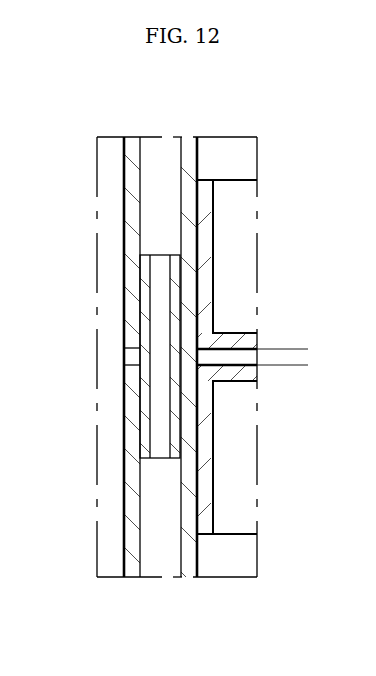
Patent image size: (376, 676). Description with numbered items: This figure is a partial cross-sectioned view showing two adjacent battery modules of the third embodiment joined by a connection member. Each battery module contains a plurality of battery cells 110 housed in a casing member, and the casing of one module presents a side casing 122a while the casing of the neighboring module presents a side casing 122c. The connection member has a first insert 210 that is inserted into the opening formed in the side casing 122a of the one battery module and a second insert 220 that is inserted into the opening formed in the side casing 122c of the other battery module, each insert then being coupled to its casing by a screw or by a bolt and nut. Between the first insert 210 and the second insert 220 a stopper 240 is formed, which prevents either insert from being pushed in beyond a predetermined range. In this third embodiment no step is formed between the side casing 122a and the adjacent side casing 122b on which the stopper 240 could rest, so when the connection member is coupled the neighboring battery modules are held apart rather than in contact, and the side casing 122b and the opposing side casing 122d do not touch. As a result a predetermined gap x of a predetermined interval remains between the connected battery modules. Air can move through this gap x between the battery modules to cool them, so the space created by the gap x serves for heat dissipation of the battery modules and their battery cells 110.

The battery cell 110 is at (237, 253).
The side casing 122a is at (135, 152).
The side casing 122b is at (246, 342).
The side casing 122c is at (133, 562).
The side casing 122d is at (246, 372).
The first insert 210 is at (143, 302).
The second insert 220 is at (143, 413).
The stopper 240 is at (133, 357).
The gap x is at (303, 318).